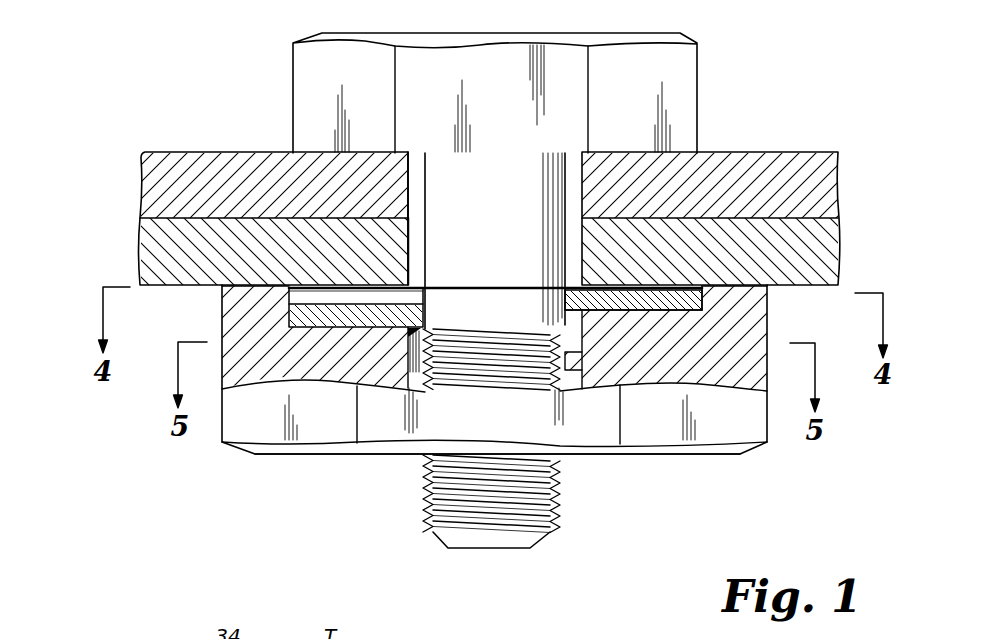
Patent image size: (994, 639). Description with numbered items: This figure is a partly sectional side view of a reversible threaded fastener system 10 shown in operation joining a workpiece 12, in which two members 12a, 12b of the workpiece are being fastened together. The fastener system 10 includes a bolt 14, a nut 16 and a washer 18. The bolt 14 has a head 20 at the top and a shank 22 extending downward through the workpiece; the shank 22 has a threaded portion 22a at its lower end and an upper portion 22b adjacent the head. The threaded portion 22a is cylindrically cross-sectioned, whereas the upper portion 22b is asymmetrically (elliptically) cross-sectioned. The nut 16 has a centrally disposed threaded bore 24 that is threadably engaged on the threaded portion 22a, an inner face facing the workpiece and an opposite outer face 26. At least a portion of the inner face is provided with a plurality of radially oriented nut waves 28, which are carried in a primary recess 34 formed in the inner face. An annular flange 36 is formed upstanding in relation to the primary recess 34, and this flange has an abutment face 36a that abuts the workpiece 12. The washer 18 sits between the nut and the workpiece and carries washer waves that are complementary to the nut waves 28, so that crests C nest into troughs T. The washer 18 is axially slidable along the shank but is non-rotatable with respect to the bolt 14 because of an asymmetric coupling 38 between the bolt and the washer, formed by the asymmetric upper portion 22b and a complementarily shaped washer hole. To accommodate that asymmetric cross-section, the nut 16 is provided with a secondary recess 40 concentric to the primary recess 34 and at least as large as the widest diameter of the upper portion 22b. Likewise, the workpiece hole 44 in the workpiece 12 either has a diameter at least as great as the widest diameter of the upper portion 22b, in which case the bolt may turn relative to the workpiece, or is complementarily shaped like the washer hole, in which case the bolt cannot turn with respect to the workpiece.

The reversible threaded fastener system 10 is at (275, 478).
The workpiece 12 is at (443, 192).
The workpiece member 12a is at (138, 171).
The workpiece member 12b is at (138, 255).
The bolt 14 is at (496, 322).
The nut 16 is at (483, 399).
The washer 18 is at (515, 315).
The head 20 is at (293, 70).
The shank 22 is at (518, 550).
The threaded portion 22a is at (423, 500).
The upper portion 22b is at (565, 213).
The threaded bore 24 is at (740, 285).
The outer face 26 is at (653, 457).
The nut waves 28 is at (310, 290).
The primary recess 34 is at (655, 297).
The annular flange 36 is at (768, 300).
The abutment face 36a is at (260, 283).
The asymmetric coupling 38 is at (407, 333).
The secondary recess 40 is at (566, 358).
The workpiece hole 44 is at (408, 240).
The crests C is at (408, 203).
The troughs T is at (408, 266).